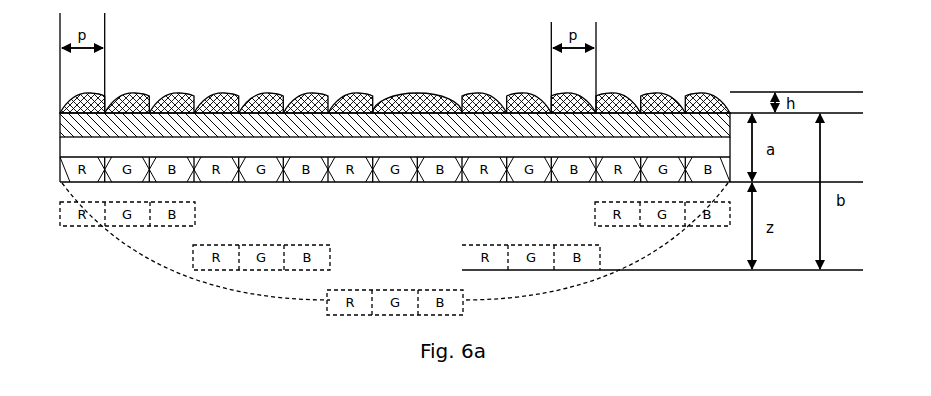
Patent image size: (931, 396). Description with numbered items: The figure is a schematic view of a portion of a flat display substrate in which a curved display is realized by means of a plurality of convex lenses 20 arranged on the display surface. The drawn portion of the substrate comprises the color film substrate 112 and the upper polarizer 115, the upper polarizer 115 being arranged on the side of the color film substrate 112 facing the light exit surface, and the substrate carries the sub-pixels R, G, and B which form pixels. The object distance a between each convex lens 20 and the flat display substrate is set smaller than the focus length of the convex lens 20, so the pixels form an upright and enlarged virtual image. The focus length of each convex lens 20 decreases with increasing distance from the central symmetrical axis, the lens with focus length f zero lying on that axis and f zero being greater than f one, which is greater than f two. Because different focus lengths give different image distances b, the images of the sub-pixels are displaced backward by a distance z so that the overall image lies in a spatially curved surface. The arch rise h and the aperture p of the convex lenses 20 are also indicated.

The convex lens 20 is at (461, 63).
The color film substrate 112 is at (404, 138).
The upper polarizer 115 is at (193, 113).